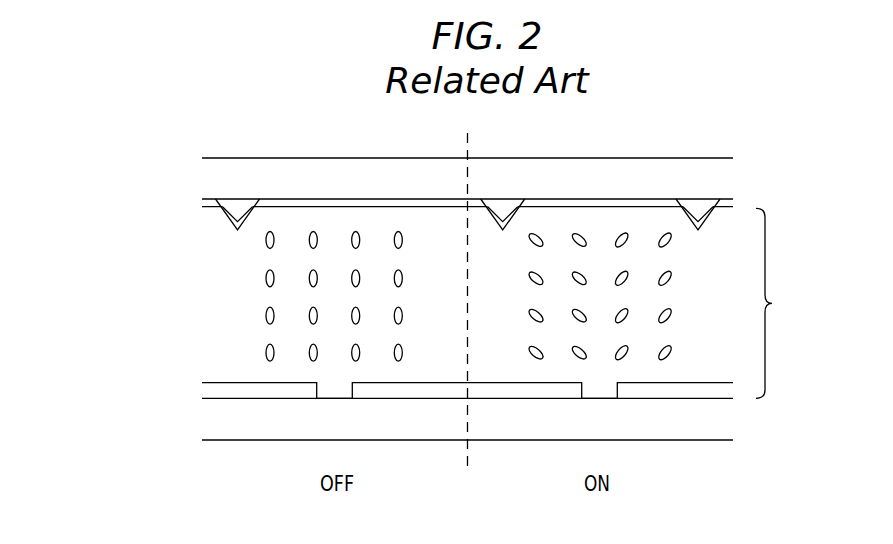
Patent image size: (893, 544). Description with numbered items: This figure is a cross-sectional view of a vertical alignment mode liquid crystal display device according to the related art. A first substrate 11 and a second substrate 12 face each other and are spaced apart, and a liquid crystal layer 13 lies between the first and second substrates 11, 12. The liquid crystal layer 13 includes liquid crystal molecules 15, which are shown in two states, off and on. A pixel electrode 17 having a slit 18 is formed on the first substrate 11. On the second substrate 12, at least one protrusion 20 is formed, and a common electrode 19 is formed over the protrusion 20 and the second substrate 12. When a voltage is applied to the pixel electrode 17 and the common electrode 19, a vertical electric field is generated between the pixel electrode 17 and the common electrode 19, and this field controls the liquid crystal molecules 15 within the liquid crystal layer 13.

The first substrate 11 is at (708, 435).
The second substrate 12 is at (708, 194).
The liquid crystal layer 13 is at (780, 303).
The liquid crystal molecules 15 is at (254, 277).
The pixel electrode 17 is at (402, 392).
The slit 18 is at (335, 392).
The common electrode 19 is at (333, 205).
The protrusion 20 is at (237, 208).